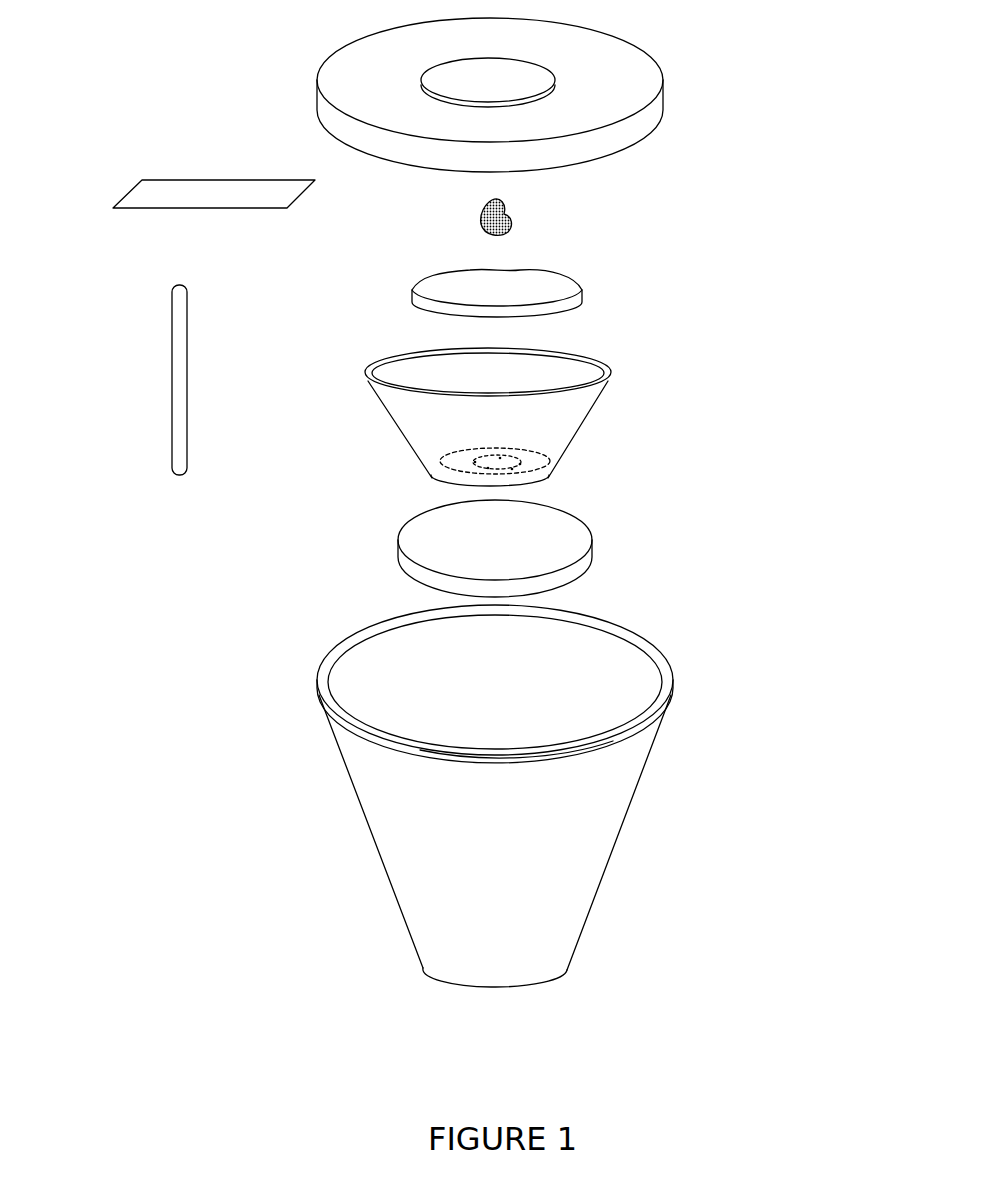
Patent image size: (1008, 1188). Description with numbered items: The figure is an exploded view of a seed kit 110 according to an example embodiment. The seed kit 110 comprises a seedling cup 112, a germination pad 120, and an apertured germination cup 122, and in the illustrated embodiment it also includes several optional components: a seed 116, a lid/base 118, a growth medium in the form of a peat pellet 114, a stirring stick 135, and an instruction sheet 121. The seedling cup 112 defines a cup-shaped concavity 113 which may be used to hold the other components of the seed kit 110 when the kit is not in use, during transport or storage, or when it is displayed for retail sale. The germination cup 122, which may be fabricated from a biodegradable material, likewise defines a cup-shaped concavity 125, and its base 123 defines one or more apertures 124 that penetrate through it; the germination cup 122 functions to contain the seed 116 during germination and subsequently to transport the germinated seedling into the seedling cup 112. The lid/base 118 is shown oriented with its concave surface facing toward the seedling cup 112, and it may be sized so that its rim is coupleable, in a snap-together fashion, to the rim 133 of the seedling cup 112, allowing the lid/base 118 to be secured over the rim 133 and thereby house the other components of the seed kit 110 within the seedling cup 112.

The seed kit 110 is at (770, 478).
The seedling cup 112 is at (610, 666).
The cup-shaped concavity 113 is at (368, 673).
The peat pellet 114 is at (563, 532).
The seed 116 is at (509, 222).
The lid/base 118 is at (655, 110).
The germination pad 120 is at (582, 290).
The instruction sheet 121 is at (155, 192).
The germination cup 122 is at (612, 374).
The base 123 is at (453, 473).
The apertures 124 is at (532, 466).
The cup-shaped concavity 125 is at (423, 371).
The rim 133 is at (613, 740).
The stirring stick 135 is at (172, 380).